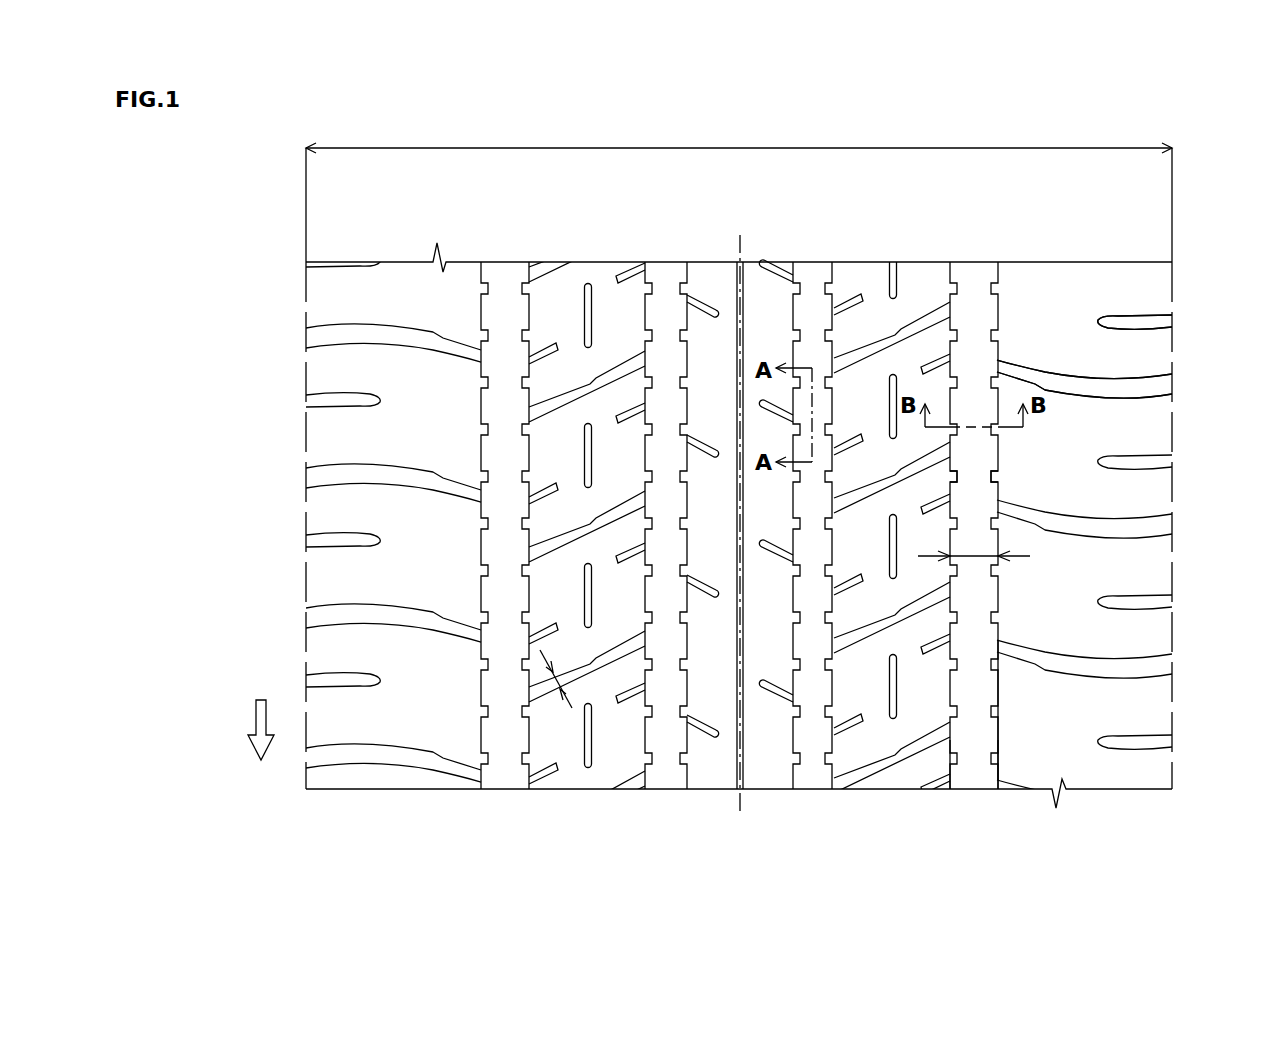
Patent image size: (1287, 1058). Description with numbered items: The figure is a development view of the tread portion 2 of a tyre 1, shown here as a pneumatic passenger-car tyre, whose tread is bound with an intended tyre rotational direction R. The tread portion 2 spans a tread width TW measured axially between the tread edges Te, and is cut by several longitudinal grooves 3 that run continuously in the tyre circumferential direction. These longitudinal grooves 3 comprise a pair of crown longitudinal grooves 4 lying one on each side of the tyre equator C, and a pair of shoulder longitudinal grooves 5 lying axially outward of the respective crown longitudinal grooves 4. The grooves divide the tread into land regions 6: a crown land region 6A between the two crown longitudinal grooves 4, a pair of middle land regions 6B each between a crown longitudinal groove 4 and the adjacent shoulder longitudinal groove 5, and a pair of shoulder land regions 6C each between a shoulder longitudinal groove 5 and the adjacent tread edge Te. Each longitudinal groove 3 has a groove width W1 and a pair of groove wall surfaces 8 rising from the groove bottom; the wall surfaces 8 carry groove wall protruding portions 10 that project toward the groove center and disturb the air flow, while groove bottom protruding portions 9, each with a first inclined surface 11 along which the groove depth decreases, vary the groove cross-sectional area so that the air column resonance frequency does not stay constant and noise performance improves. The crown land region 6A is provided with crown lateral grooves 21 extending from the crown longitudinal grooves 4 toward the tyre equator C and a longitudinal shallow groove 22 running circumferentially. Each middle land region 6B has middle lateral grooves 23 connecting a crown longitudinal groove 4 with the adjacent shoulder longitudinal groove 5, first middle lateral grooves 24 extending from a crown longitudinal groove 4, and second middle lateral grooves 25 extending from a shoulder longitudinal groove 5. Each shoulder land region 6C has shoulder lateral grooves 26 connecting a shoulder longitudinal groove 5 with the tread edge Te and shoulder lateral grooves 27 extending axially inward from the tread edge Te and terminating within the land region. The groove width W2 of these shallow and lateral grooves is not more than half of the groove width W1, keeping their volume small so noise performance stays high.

The tyre 1 is at (1195, 188).
The tread portion 2 is at (1078, 238).
The longitudinal groove 3 is at (507, 280).
The crown longitudinal groove 4 is at (813, 281).
The shoulder longitudinal groove 5 is at (973, 283).
The land region 6 is at (770, 760).
The crown land region 6A is at (739, 522).
The middle land region 6B is at (739, 531).
The shoulder land region 6C is at (400, 718).
The groove wall surface 8 is at (958, 750).
The groove bottom protruding portion 9 is at (977, 602).
The groove wall protruding portion 10 is at (957, 473).
The first inclined surface 11 is at (977, 602).
The crown lateral groove 21 is at (705, 292).
The longitudinal shallow groove 22 is at (735, 745).
The middle lateral groove 23 is at (863, 295).
The first middle lateral groove 24 is at (860, 740).
The second middle lateral groove 25 is at (927, 296).
The shoulder lateral groove 26 is at (1113, 388).
The shoulder lateral groove 27 is at (1140, 325).
The tread width TW is at (739, 191).
The groove width W1 is at (977, 557).
The groove width W2 is at (548, 695).
The tread edge Te is at (1175, 290).
The tyre equator C is at (738, 513).
The tyre rotational direction R is at (261, 715).